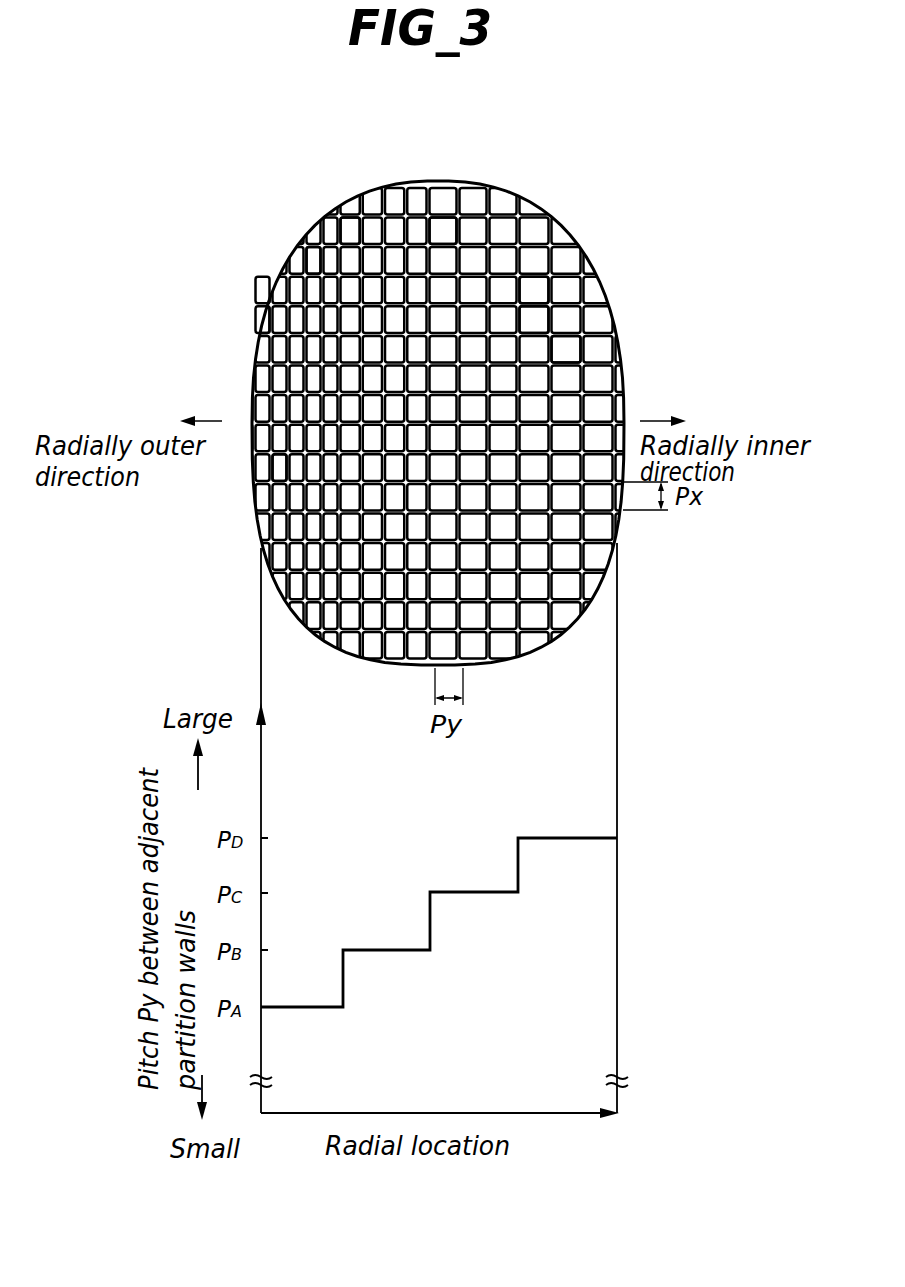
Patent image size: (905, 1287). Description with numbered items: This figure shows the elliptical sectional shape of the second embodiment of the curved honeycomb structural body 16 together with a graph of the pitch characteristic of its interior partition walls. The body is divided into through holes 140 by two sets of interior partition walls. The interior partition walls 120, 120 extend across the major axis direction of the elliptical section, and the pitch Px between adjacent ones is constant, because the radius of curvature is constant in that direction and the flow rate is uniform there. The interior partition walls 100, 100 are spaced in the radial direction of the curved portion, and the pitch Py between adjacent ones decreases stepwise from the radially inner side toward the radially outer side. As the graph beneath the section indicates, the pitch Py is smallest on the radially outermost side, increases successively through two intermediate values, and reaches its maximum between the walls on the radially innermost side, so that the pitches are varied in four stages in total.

The curved honeycomb structural body 16 is at (397, 320).
The interior partition walls 100 is at (250, 322).
The interior partition walls 120 is at (390, 230).
The through holes 140 is at (445, 230).